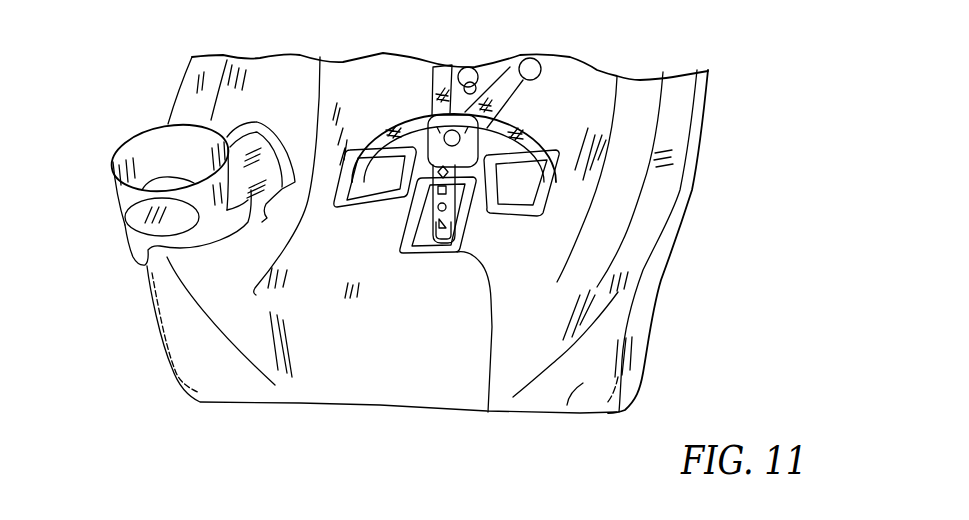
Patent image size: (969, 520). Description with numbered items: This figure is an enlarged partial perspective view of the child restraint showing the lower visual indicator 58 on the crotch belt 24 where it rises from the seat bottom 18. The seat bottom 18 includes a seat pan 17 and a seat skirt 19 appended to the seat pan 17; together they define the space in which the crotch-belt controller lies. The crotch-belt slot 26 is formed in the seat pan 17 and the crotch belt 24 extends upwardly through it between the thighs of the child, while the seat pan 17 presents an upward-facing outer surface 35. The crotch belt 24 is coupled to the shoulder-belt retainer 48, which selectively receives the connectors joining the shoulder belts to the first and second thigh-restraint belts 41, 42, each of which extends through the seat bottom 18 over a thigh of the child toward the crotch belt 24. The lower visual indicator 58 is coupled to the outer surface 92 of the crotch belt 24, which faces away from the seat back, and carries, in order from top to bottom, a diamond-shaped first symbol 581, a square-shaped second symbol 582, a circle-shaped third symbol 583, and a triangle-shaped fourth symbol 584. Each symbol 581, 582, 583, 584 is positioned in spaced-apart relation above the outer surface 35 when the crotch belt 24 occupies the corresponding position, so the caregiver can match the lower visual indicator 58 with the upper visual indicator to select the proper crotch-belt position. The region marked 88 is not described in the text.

The seat pan 17 is at (287, 274).
The seat bottom 18 is at (681, 259).
The seat skirt 19 is at (567, 405).
The crotch belt 24 is at (410, 215).
The crotch-belt slot 26 is at (418, 256).
The outer surface 35 is at (488, 412).
The first thigh-restraint belt 41 is at (455, 171).
The second thigh-restraint belt 42 is at (411, 114).
The shoulder-belt retainer 48 is at (522, 146).
The lower visual indicator 58 is at (666, 249).
The first symbol 581 is at (455, 190).
The second symbol 582 is at (455, 207).
The third symbol 583 is at (455, 225).
The fourth symbol 584 is at (452, 236).
The console top surface 88 is at (345, 72).
The outer surface 92 is at (418, 210).